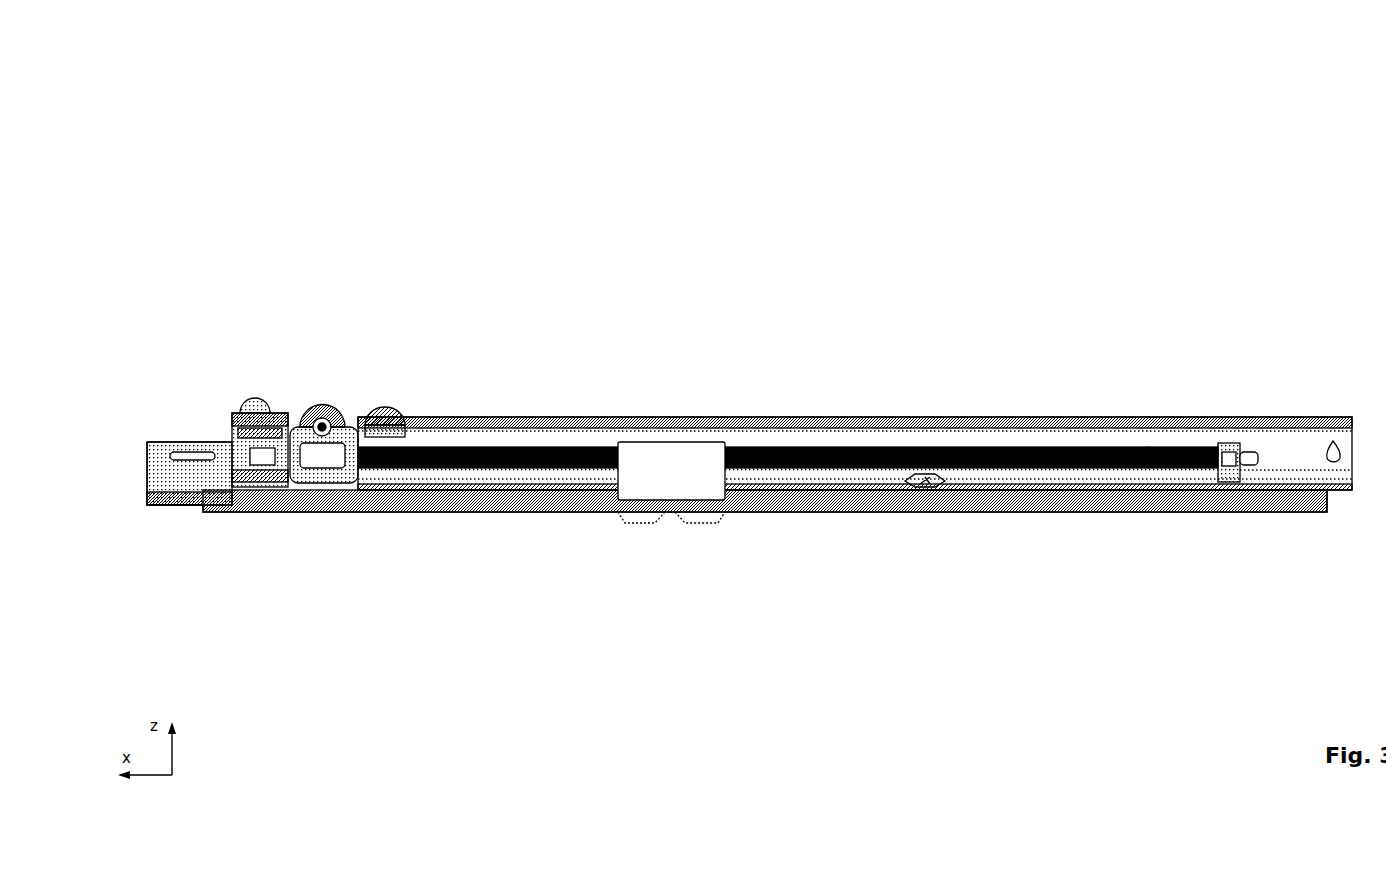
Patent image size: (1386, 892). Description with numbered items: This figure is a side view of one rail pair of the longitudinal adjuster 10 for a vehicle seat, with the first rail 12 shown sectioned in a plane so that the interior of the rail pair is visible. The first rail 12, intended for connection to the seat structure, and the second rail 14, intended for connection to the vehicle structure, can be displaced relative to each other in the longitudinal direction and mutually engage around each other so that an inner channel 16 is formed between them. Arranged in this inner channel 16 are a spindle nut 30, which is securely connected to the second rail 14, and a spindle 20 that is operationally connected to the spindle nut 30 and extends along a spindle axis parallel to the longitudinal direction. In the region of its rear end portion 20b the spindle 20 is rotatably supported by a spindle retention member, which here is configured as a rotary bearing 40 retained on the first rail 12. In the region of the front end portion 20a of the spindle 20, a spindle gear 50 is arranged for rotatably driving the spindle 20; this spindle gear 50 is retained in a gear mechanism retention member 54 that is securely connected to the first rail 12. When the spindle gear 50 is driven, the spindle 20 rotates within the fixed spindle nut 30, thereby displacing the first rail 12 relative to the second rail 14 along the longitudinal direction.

The longitudinal adjuster 10 is at (392, 222).
The first rail 12 is at (915, 425).
The second rail 14 is at (575, 510).
The inner channel 16 is at (810, 437).
The spindle 20 is at (522, 447).
The front end portion 20a is at (222, 434).
The rear end portion 20b is at (1200, 400).
The spindle nut 30 is at (690, 488).
The rotary bearing 40 is at (1232, 472).
The spindle gear 50 is at (312, 425).
The gear mechanism retention member 54 is at (357, 440).